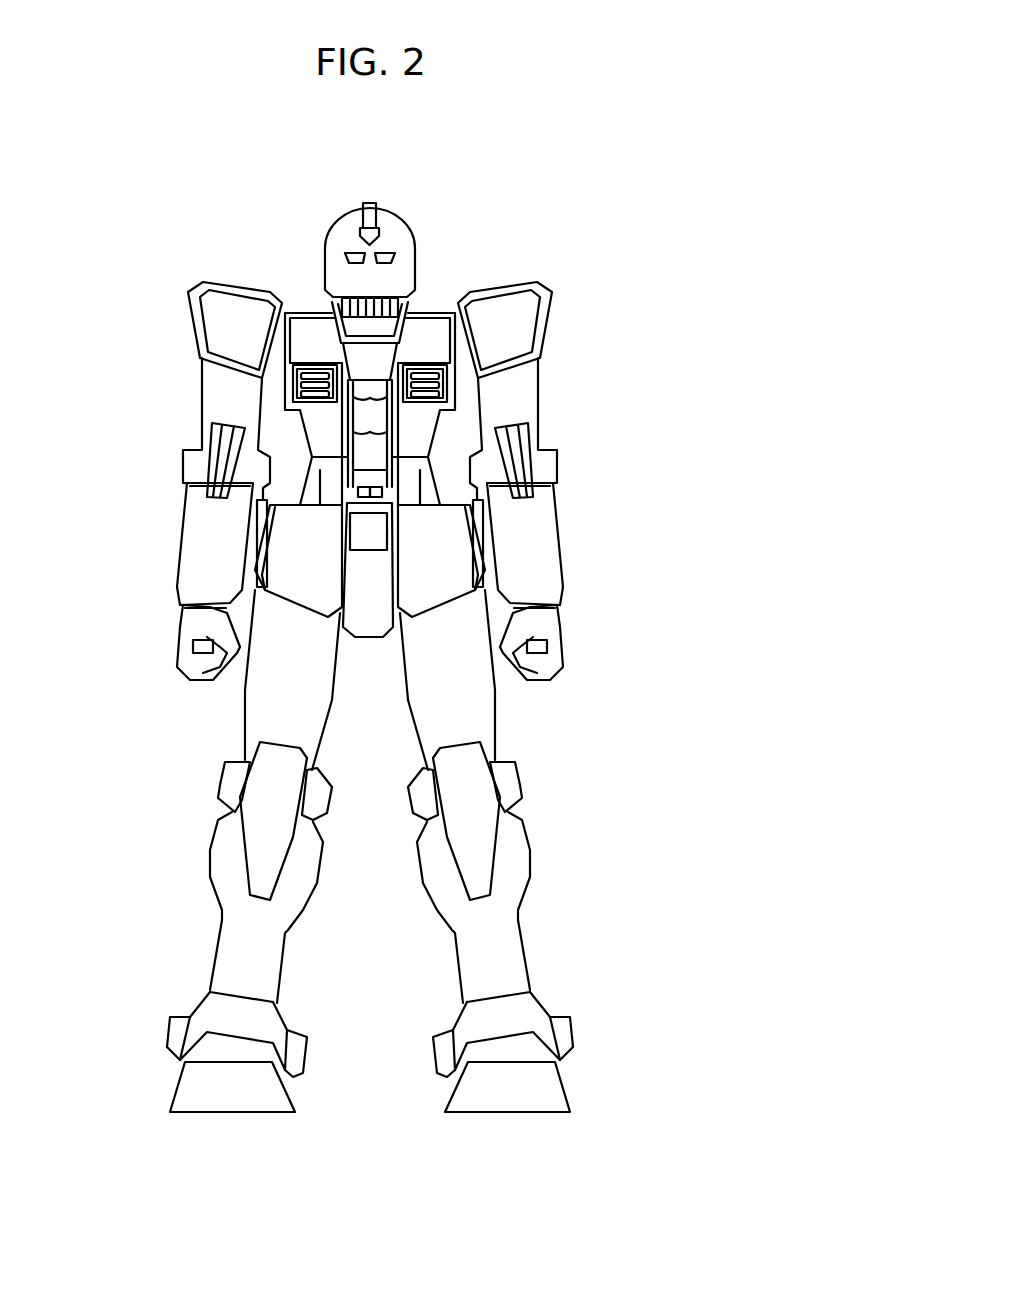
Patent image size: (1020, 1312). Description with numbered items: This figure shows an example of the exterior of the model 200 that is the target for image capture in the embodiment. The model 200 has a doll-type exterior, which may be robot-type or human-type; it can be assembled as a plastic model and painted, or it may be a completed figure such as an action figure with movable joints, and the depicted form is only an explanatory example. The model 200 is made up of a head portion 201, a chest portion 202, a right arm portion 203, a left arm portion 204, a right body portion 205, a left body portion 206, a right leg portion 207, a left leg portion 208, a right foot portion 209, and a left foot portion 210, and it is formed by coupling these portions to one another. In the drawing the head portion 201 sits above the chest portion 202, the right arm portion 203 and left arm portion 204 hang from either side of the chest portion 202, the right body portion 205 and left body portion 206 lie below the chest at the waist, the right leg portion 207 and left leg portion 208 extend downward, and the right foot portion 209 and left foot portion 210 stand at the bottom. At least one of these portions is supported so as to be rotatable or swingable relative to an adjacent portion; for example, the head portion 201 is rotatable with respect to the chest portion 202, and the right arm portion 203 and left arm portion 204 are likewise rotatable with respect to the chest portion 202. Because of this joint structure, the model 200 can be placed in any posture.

The model 200 is at (273, 236).
The head portion 201 is at (390, 232).
The chest portion 202 is at (420, 345).
The right arm portion 203 is at (203, 395).
The left arm portion 204 is at (510, 397).
The right body portion 205 is at (293, 472).
The left body portion 206 is at (440, 487).
The right leg portion 207 is at (257, 937).
The left leg portion 208 is at (492, 912).
The right foot portion 209 is at (233, 1083).
The left foot portion 210 is at (512, 1083).